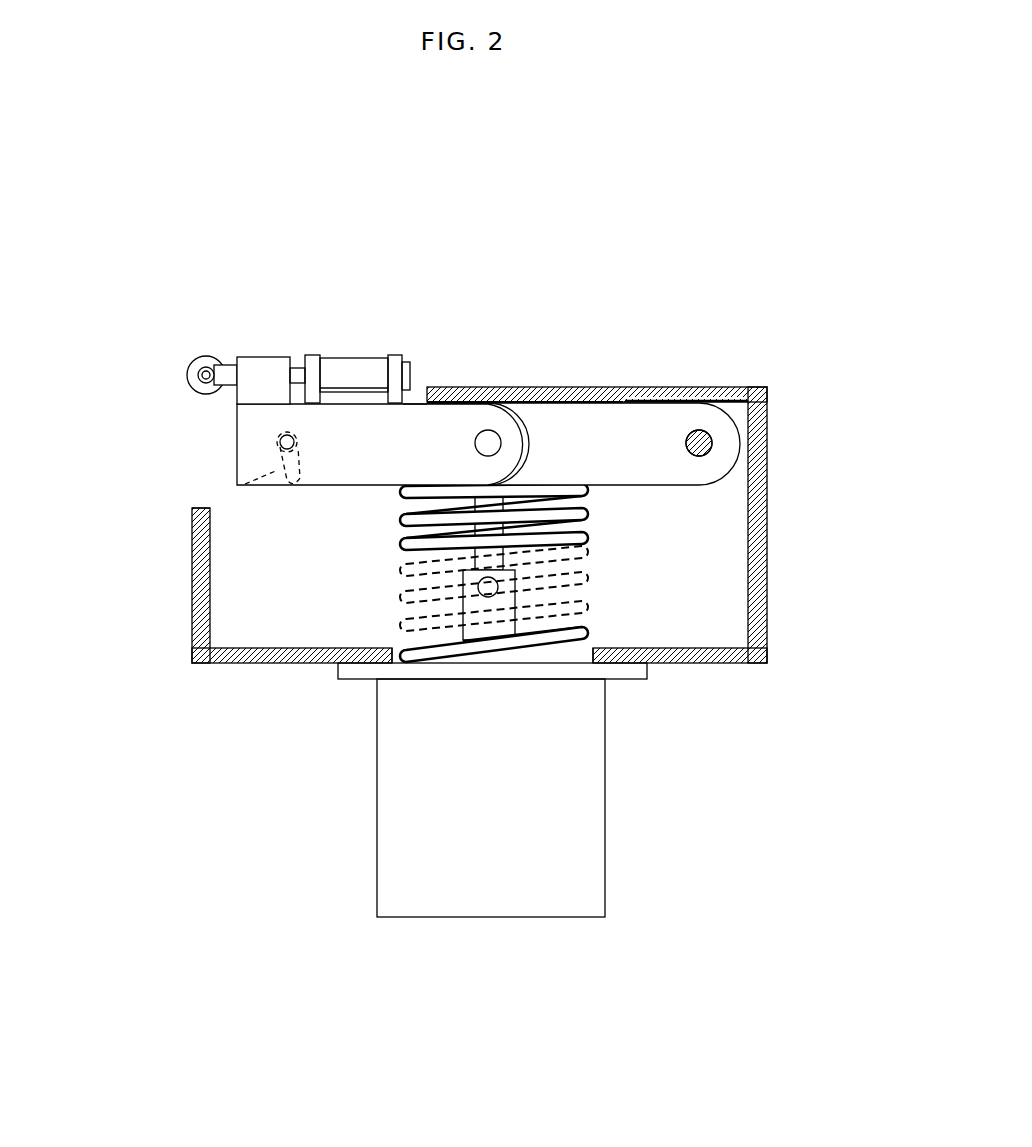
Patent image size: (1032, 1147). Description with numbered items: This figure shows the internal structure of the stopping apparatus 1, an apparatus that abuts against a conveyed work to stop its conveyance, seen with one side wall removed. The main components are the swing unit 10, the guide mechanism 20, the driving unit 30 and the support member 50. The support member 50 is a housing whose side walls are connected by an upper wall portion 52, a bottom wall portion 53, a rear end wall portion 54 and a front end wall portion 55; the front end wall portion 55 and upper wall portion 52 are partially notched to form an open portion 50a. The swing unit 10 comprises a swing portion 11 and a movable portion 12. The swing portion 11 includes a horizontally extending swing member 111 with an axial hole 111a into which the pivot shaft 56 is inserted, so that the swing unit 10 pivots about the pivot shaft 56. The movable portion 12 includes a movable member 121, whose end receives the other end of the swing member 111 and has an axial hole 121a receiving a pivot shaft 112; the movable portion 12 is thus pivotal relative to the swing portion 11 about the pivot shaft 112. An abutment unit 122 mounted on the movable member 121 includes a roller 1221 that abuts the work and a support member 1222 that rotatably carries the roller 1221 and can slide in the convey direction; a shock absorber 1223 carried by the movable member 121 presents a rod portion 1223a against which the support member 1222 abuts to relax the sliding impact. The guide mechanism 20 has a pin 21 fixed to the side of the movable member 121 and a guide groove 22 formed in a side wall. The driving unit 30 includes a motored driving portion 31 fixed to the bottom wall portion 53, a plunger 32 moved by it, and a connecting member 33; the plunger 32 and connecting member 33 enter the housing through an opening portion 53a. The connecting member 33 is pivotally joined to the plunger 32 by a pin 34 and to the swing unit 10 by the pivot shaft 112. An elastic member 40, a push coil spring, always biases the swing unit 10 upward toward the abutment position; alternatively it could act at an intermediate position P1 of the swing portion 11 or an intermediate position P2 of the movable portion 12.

The stopping apparatus 1 is at (265, 256).
The swing unit 10 is at (498, 422).
The swing portion 11 is at (697, 505).
The movable portion 12 is at (279, 515).
The guide mechanism 20 is at (182, 487).
The pin 21 is at (280, 445).
The guide groove 22 is at (237, 485).
The driving unit 30 is at (454, 798).
The driving portion 31 is at (583, 857).
The plunger 32 is at (520, 627).
The connecting member 33 is at (493, 548).
The pin 34 is at (480, 582).
The elastic member 40 is at (471, 573).
The support member 50 is at (472, 553).
The open portion 50a is at (183, 433).
The upper wall portion 52 is at (636, 388).
The bottom wall portion 53 is at (695, 663).
The opening portion 53a is at (602, 663).
The rear end wall portion 54 is at (768, 522).
The front end wall portion 55 is at (192, 615).
The pivot shaft 56 is at (707, 437).
The swing member 111 is at (710, 405).
The axial hole 111a is at (712, 442).
The pivot shaft 112 is at (490, 430).
The movable member 121 is at (407, 406).
The axial hole 121a is at (512, 410).
The abutment unit 122 is at (290, 317).
The roller 1221 is at (195, 356).
The support member 1222 is at (243, 357).
The shock absorber 1223 is at (372, 362).
The rod portion 1223a is at (298, 368).
The position P1 is at (640, 497).
The position P2 is at (322, 496).